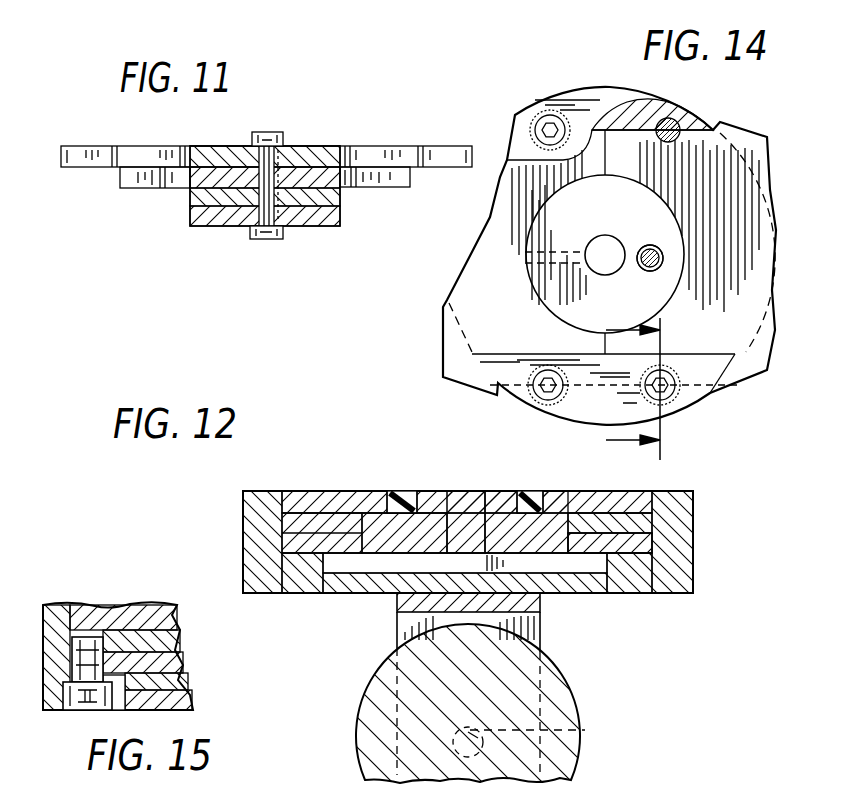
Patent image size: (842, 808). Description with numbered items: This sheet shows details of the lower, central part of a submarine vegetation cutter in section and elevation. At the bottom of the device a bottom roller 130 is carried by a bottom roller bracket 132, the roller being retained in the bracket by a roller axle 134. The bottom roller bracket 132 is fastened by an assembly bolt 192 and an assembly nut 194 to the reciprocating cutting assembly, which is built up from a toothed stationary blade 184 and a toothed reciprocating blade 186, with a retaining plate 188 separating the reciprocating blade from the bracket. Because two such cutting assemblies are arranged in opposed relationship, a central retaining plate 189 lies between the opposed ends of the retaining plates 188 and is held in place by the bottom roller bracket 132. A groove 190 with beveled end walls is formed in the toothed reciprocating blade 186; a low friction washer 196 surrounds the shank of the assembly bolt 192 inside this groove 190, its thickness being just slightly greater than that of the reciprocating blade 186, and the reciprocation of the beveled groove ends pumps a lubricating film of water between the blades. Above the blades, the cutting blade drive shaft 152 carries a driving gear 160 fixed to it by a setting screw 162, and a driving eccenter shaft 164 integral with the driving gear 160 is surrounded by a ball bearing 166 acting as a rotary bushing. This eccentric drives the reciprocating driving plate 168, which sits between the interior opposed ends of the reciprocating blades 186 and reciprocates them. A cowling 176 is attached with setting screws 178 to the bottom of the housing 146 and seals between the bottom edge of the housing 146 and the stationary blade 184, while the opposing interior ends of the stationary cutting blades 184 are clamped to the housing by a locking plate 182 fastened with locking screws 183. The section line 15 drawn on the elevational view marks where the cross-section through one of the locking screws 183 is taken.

In FIG. 12, the bottom roller 130 is at (560, 698).
In FIG. 11, the bottom roller bracket 132 is at (342, 222).
In FIG. 12, the bottom roller bracket 132 is at (532, 623).
In FIG. 12, the roller axle 134 is at (580, 730).
In FIG. 14, the housing 146 is at (742, 118).
In FIG. 14, the cutting blade drive shaft 152 is at (603, 244).
In FIG. 12, the cutting blade drive shaft 152 is at (460, 487).
In FIG. 14, the driving gear 160 is at (665, 292).
In FIG. 12, the driving gear 160 is at (495, 490).
In FIG. 14, the setting screw 162 is at (526, 272).
In FIG. 14, the driving eccenter shaft 164 is at (664, 239).
In FIG. 14, the ball bearing 166 is at (645, 270).
In FIG. 12, the reciprocating driving plate 168 is at (380, 563).
In FIG. 12, the cowling 176 is at (248, 542).
In FIG. 12, the setting screws 178 is at (307, 562).
In FIG. 14, the locking plate 182 is at (584, 103).
In FIG. 14, the locking screws 183 is at (540, 120).
In FIG. 15, the locking screws 183 is at (70, 712).
In FIG. 11, the toothed stationary blade 184 is at (213, 147).
In FIG. 14, the toothed stationary blade 184 is at (750, 140).
In FIG. 12, the toothed stationary blade 184 is at (643, 543).
In FIG. 11, the toothed reciprocating blade 186 is at (352, 184).
In FIG. 11, the retaining plate 188 is at (190, 193).
In FIG. 12, the central retaining plate 189 is at (342, 586).
In FIG. 11, the groove 190 is at (318, 208).
In FIG. 11, the assembly bolt 192 is at (268, 132).
In FIG. 11, the assembly nut 194 is at (250, 240).
In FIG. 11, the washer 196 is at (278, 152).
In FIG. 14, the section line 15- 15 is at (616, 385).